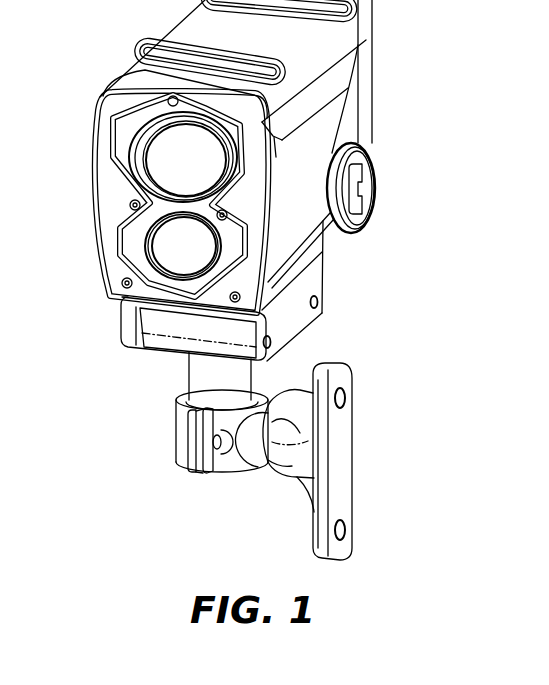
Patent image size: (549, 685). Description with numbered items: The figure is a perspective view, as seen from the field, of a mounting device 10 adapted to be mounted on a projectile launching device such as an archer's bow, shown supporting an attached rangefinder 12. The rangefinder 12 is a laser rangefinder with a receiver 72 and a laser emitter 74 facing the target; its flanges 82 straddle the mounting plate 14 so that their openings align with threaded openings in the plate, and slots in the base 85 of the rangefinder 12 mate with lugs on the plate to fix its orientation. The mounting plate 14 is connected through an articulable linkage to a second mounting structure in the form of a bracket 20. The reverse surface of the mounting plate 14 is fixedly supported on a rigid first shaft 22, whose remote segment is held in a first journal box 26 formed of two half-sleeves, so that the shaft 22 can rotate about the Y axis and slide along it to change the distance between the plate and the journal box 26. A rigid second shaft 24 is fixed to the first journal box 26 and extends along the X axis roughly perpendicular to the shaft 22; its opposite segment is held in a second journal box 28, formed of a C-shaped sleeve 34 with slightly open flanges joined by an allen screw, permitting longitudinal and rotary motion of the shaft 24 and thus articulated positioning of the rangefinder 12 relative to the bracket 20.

The mounting device 10 is at (365, 394).
The rangefinder 12 is at (384, 82).
The mounting plate 14 is at (153, 320).
The bracket 20 is at (342, 475).
The first shaft 22 is at (207, 372).
The second shaft 24 is at (249, 470).
The first journal box 26 is at (170, 445).
The second journal box 28 is at (296, 385).
The C-shaped sleeve 34 is at (298, 420).
The receiver 72 is at (178, 150).
The laser emitter 74 is at (168, 253).
The flanges 82 is at (122, 341).
The base 85 is at (327, 272).